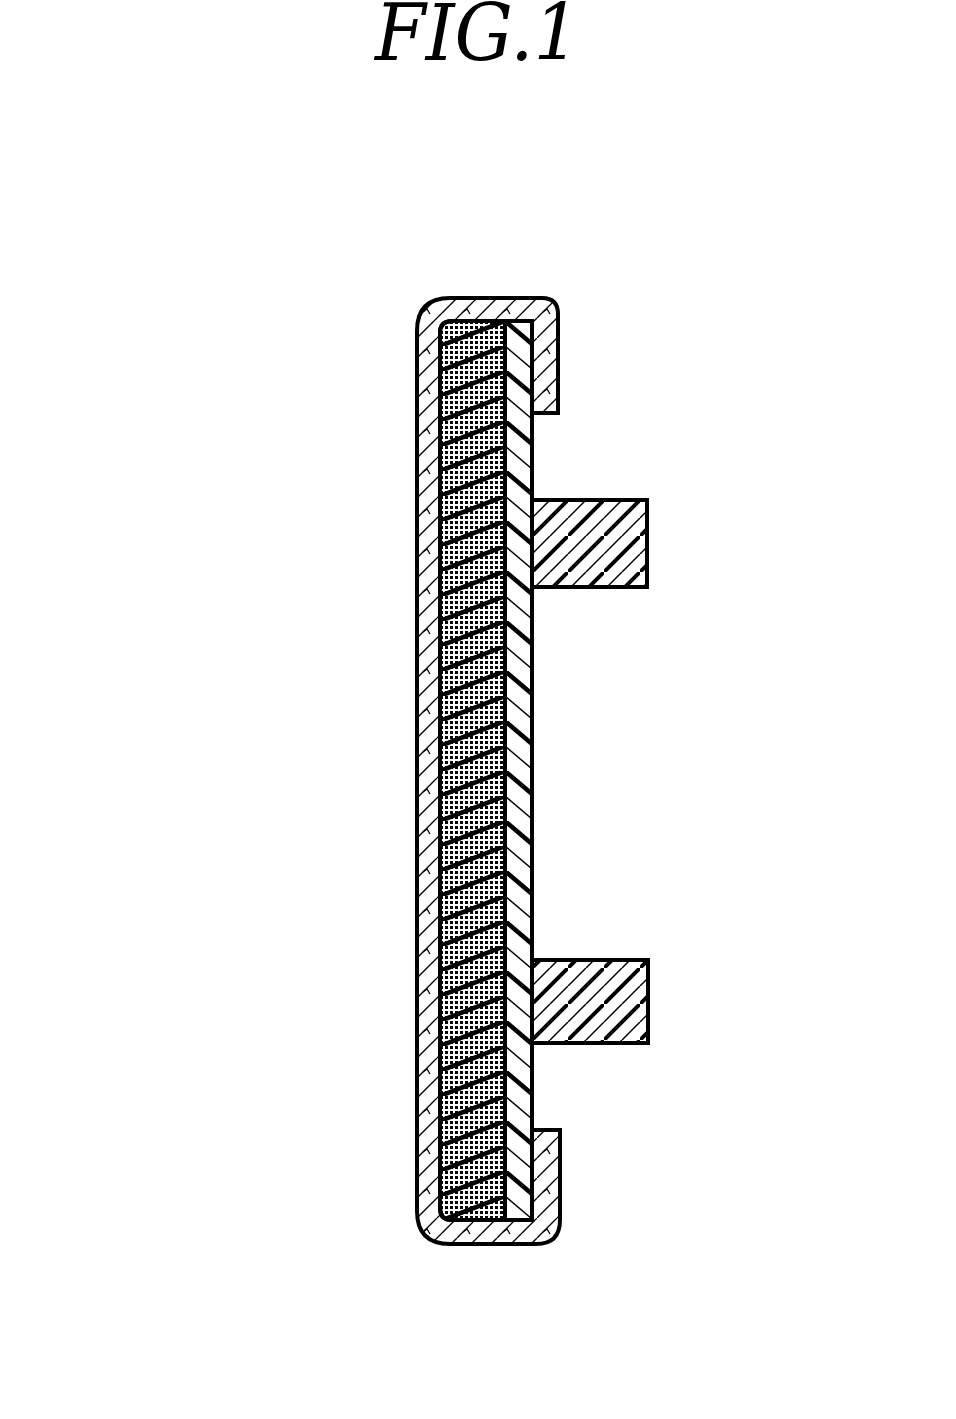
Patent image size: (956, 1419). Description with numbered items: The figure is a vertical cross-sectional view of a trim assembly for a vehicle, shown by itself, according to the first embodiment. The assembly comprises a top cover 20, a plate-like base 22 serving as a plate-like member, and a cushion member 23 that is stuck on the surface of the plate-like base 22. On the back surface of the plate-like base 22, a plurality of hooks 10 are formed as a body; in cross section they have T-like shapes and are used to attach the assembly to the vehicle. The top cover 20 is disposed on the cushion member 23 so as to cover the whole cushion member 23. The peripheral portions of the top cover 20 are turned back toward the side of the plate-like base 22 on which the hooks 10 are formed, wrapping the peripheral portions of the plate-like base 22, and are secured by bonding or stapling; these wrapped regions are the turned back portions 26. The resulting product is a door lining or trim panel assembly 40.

The hooks 10 is at (612, 500).
The top cover 20 is at (418, 578).
The plate-like base 22 is at (532, 773).
The cushion member 23 is at (418, 1015).
The turned back portions 26 is at (545, 297).
The trim panel assembly 40 is at (232, 752).